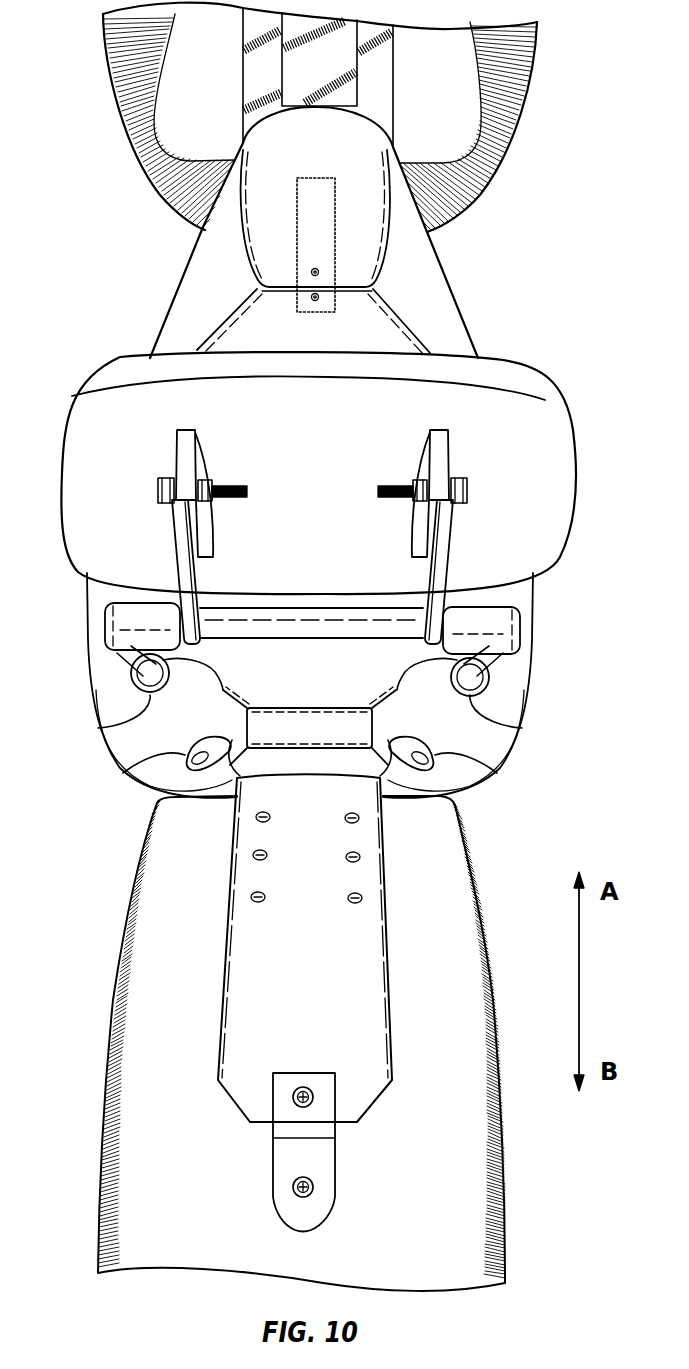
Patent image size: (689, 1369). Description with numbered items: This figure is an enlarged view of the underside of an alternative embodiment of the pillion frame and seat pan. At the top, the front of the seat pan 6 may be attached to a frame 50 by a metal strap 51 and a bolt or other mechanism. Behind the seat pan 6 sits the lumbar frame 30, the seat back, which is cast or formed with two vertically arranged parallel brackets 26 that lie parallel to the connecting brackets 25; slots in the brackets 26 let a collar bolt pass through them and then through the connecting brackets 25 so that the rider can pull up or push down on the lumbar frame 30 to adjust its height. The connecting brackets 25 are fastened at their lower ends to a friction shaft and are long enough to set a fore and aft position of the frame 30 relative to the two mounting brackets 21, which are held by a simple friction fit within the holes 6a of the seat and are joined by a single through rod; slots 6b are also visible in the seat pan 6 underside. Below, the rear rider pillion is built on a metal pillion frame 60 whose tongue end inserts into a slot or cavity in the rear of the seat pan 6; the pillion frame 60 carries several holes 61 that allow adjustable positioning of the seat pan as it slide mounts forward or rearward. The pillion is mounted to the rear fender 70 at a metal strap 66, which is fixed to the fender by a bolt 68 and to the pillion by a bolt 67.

The frame 50 is at (243, 76).
The metal strap 51 is at (333, 255).
The seat pan 6 is at (197, 287).
The holes 6a is at (98, 728).
The slot 6b is at (160, 753).
The lumbar frame 30 is at (321, 455).
The brackets 26 is at (182, 452).
The connecting brackets 25 is at (178, 567).
The mounting brackets 21 is at (120, 663).
The pillion frame 60 is at (222, 983).
The holes 61 is at (255, 853).
The metal strap 66 is at (335, 1167).
The bolt 67 is at (293, 1097).
The bolt 68 is at (293, 1187).
The rear fender 70 is at (503, 1190).